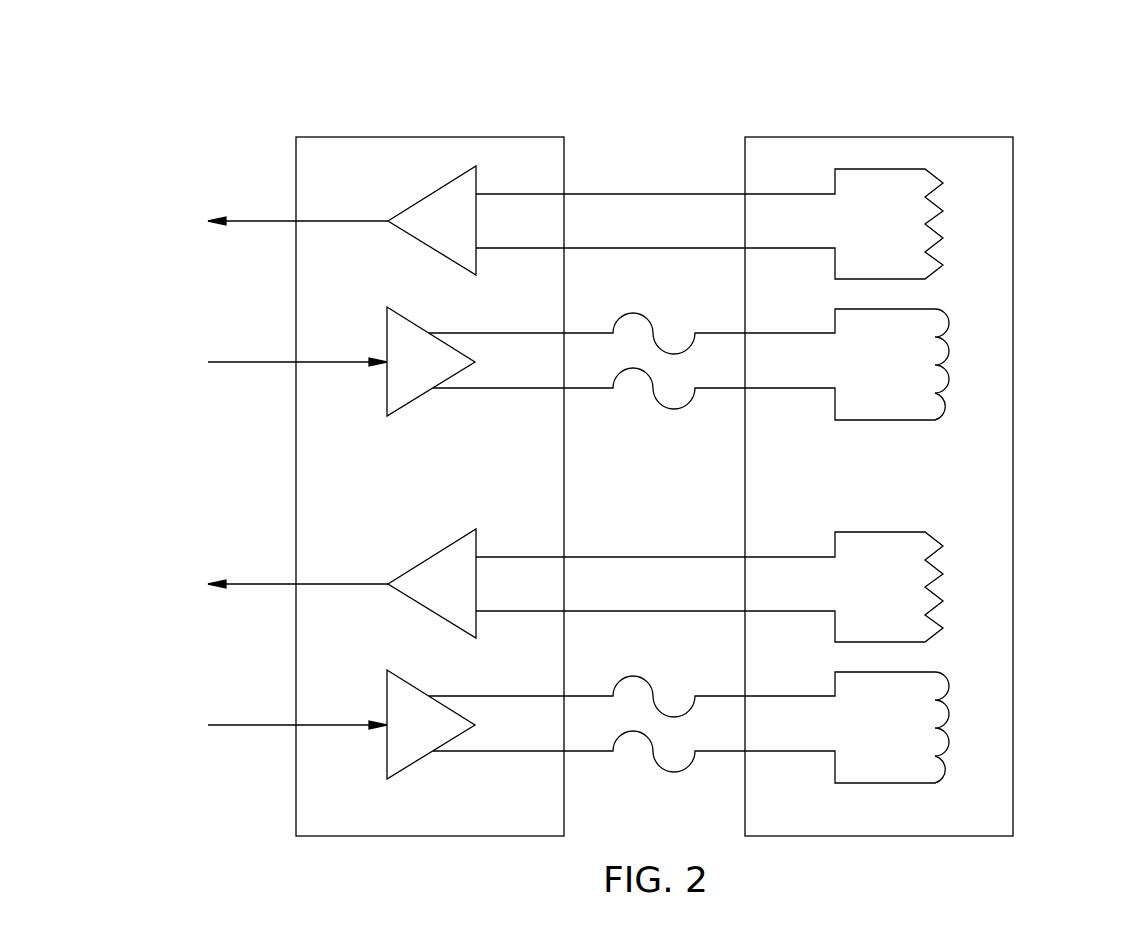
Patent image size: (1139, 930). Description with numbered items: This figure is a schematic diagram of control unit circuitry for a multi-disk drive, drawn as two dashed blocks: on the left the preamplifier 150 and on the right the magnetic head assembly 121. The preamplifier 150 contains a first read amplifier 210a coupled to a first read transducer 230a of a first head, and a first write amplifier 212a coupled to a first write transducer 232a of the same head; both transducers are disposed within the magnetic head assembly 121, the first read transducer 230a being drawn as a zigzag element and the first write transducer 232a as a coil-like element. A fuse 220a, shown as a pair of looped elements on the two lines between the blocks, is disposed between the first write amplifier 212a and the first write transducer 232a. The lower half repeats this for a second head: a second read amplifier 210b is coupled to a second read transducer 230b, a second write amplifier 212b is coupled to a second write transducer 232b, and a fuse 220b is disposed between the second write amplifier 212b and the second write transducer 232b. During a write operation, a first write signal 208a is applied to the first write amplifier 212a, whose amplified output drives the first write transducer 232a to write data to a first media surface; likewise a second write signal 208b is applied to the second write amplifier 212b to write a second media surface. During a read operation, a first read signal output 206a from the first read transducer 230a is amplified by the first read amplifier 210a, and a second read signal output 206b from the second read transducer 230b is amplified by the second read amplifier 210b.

The preamplifier 150 is at (496, 137).
The magnetic head assembly 121 is at (946, 137).
The first read amplifier 210a is at (436, 190).
The second read amplifier 210b is at (403, 583).
The first write amplifier 212a is at (386, 330).
The second write amplifier 212b is at (396, 707).
The first read signal output 206a is at (260, 221).
The second read signal output 206b is at (260, 584).
The first write signal 208a is at (260, 361).
The second write signal 208b is at (260, 724).
The fuse 220a is at (650, 342).
The fuse 220b is at (654, 742).
The first read transducer 230a is at (940, 226).
The second read transducer 230b is at (924, 587).
The first write transducer 232a is at (945, 360).
The second write transducer 232b is at (924, 727).